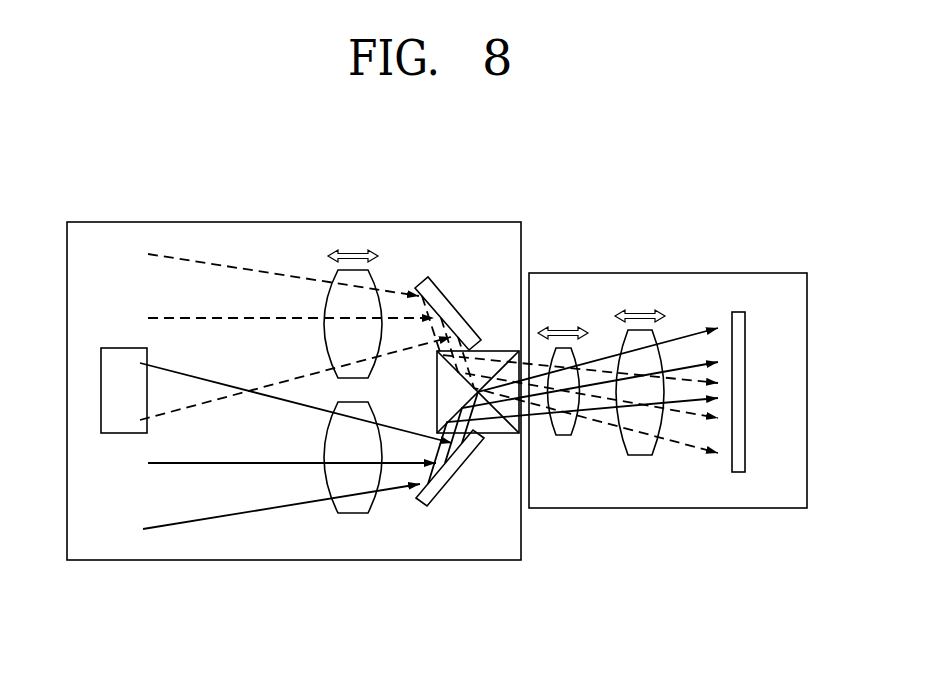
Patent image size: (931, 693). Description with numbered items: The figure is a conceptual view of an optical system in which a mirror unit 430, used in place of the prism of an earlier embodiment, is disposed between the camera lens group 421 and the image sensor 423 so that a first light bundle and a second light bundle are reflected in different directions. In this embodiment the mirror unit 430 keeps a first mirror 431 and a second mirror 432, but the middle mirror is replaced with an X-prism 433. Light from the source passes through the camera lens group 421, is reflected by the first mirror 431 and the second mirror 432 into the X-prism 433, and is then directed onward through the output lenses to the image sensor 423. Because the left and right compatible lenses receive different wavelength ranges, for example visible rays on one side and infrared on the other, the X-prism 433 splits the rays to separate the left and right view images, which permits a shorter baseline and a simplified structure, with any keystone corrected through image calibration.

The first camera lens group 421 is at (353, 270).
The image sensor 423 is at (741, 320).
The mirror unit 430 is at (577, 172).
The first mirror 431 is at (448, 300).
The second mirror 432 is at (481, 437).
The X-prism 433 is at (485, 354).